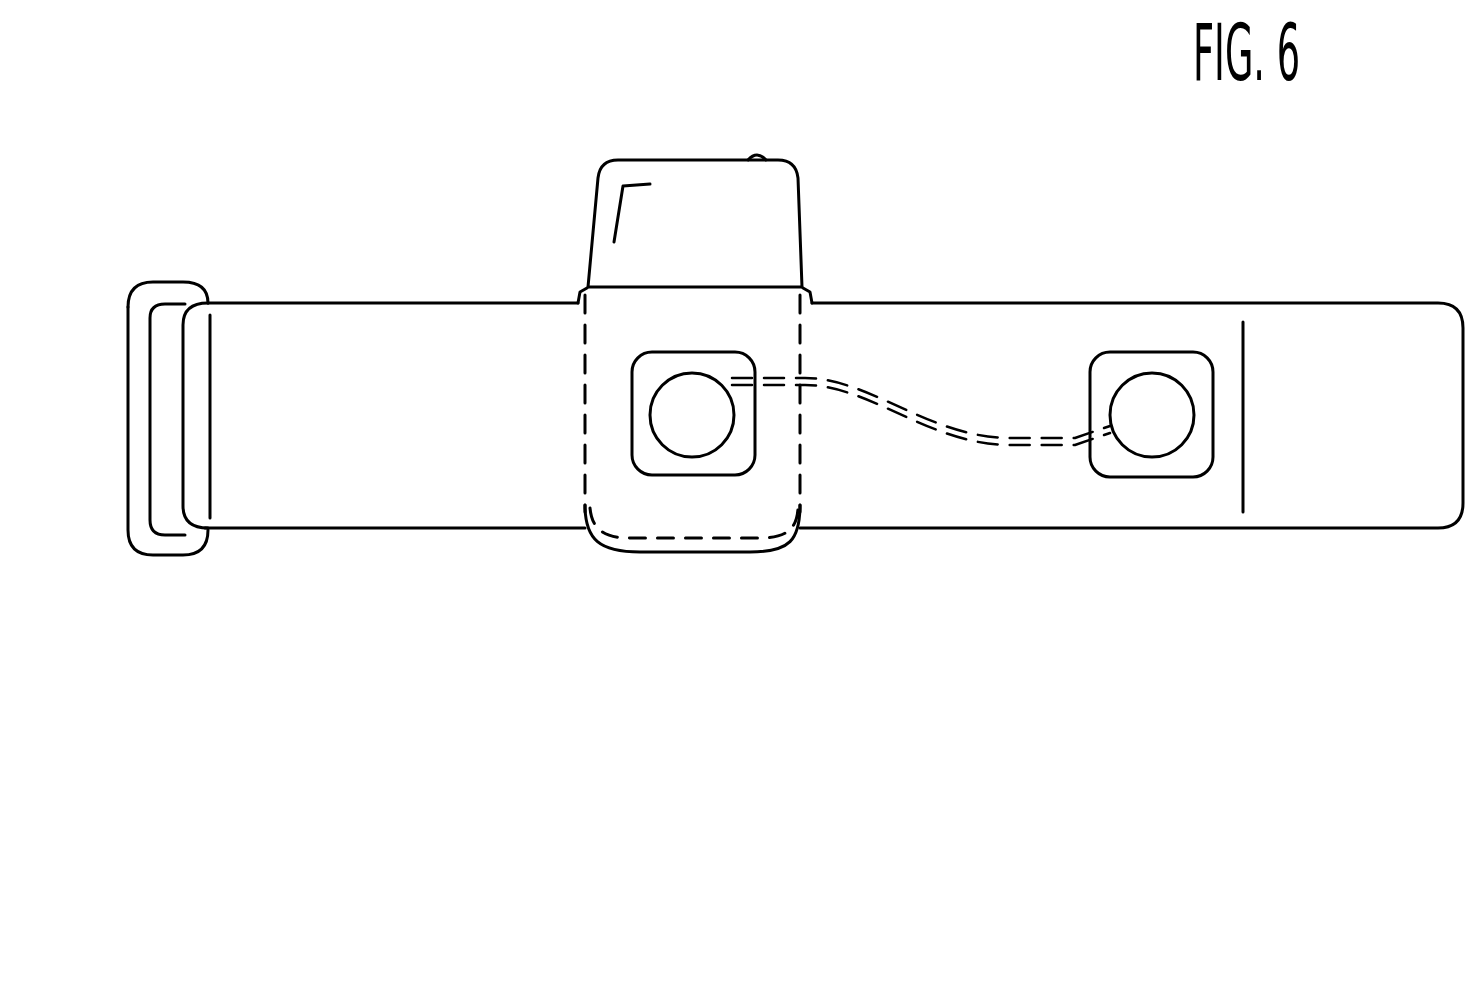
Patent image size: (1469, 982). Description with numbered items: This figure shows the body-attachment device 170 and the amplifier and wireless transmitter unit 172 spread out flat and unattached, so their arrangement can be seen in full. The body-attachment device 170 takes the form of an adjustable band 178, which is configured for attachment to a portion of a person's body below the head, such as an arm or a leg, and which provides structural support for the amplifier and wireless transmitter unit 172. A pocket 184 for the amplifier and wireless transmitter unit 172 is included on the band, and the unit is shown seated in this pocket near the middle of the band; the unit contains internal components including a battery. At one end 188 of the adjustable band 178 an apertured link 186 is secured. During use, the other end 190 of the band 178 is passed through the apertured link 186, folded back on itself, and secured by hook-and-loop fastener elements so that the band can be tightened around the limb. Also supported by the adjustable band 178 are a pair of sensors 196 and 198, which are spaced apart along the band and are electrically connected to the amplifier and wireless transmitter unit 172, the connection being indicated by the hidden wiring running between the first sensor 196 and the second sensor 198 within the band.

The body-attachment device 170 is at (512, 250).
The amplifier and wireless transmitter unit 172 is at (780, 185).
The adjustable band 178 is at (485, 470).
The pocket 184 is at (775, 323).
The apertured link 186 is at (160, 548).
The one end 188 is at (233, 322).
The other end 190 is at (1338, 468).
The sensor 196 is at (685, 445).
The sensor 198 is at (1153, 442).